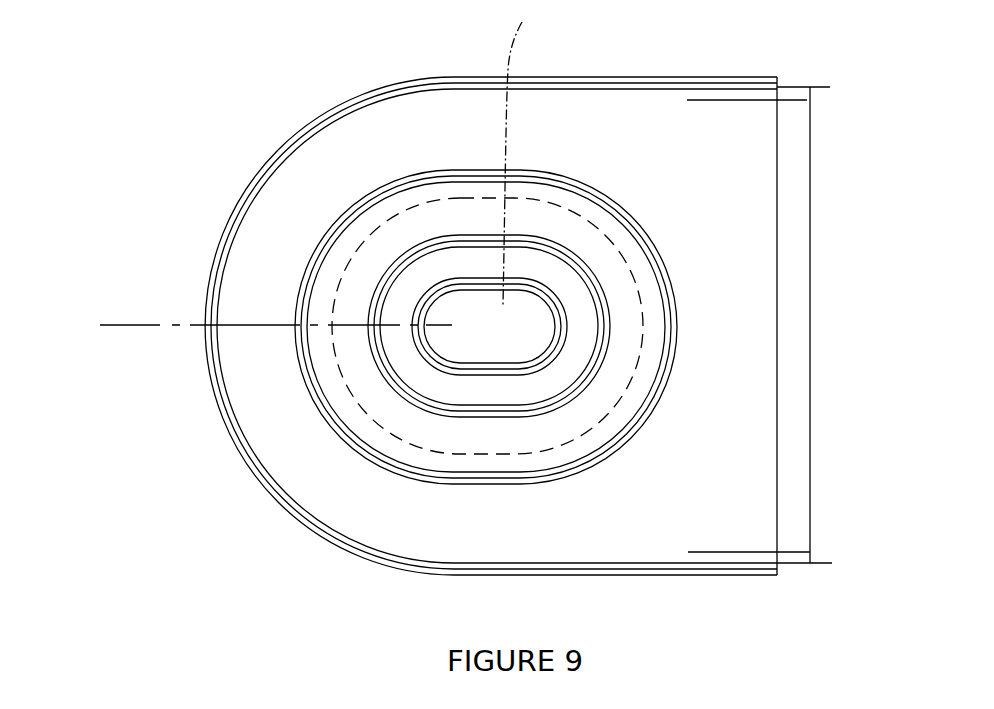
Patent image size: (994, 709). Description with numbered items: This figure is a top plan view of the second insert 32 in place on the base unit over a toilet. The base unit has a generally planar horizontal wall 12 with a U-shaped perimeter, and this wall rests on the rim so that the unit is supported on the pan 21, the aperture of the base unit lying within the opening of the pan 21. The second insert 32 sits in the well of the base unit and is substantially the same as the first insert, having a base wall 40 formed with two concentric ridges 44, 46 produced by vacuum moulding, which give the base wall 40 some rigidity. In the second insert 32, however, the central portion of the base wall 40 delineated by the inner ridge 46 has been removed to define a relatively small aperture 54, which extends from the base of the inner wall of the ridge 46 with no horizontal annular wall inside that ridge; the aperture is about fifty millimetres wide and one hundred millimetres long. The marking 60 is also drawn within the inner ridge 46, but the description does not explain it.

The horizontal wall 12 is at (747, 183).
The pan 21 is at (795, 138).
The second insert 32 is at (633, 305).
The outer ridge 44 is at (597, 373).
The inner ridge 46 is at (567, 342).
The central opening 60 is at (478, 339).
The aperture 54 is at (557, 152).
The base wall 40 is at (100, 325).